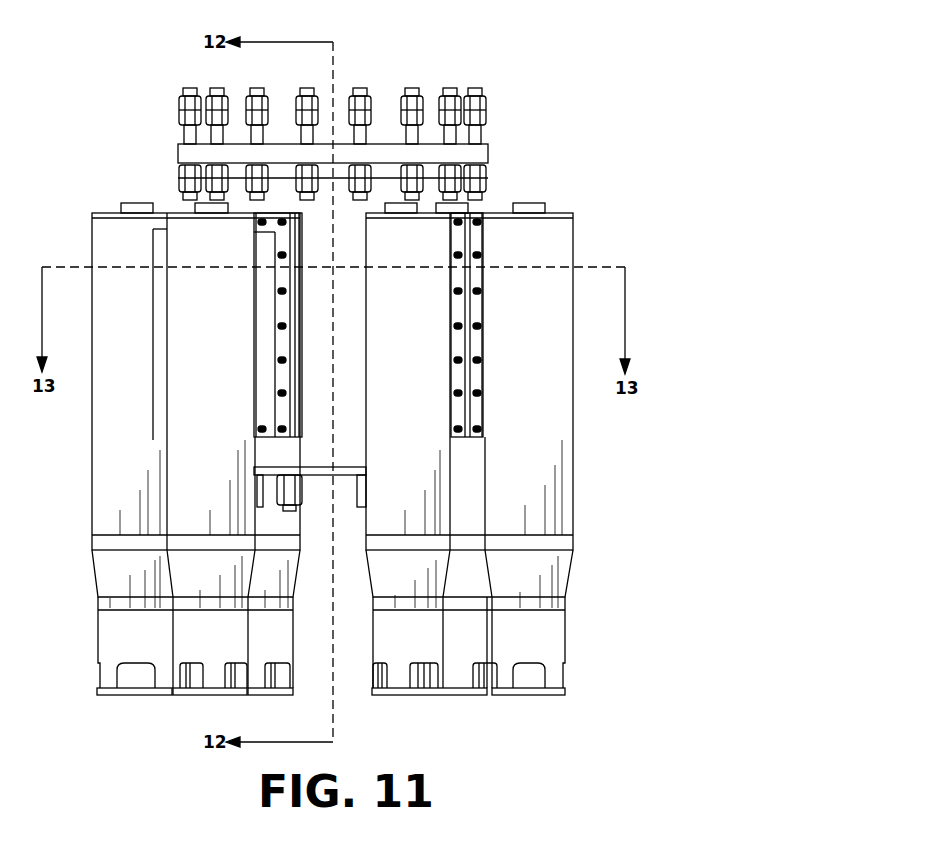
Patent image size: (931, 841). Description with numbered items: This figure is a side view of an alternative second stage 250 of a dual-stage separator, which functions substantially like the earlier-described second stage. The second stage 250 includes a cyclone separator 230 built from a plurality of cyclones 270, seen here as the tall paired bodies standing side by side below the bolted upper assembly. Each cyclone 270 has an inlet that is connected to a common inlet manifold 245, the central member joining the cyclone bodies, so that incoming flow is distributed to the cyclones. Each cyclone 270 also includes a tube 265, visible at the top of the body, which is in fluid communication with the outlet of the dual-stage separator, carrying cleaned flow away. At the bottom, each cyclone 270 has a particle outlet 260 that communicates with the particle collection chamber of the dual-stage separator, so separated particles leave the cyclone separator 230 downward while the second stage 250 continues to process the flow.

The second stage 250 is at (534, 20).
The cyclone separator 230 is at (107, 460).
The inlet manifold 245 is at (348, 369).
The tube 265 is at (528, 202).
The cyclone 270 is at (560, 576).
The particle outlet 260 is at (555, 717).